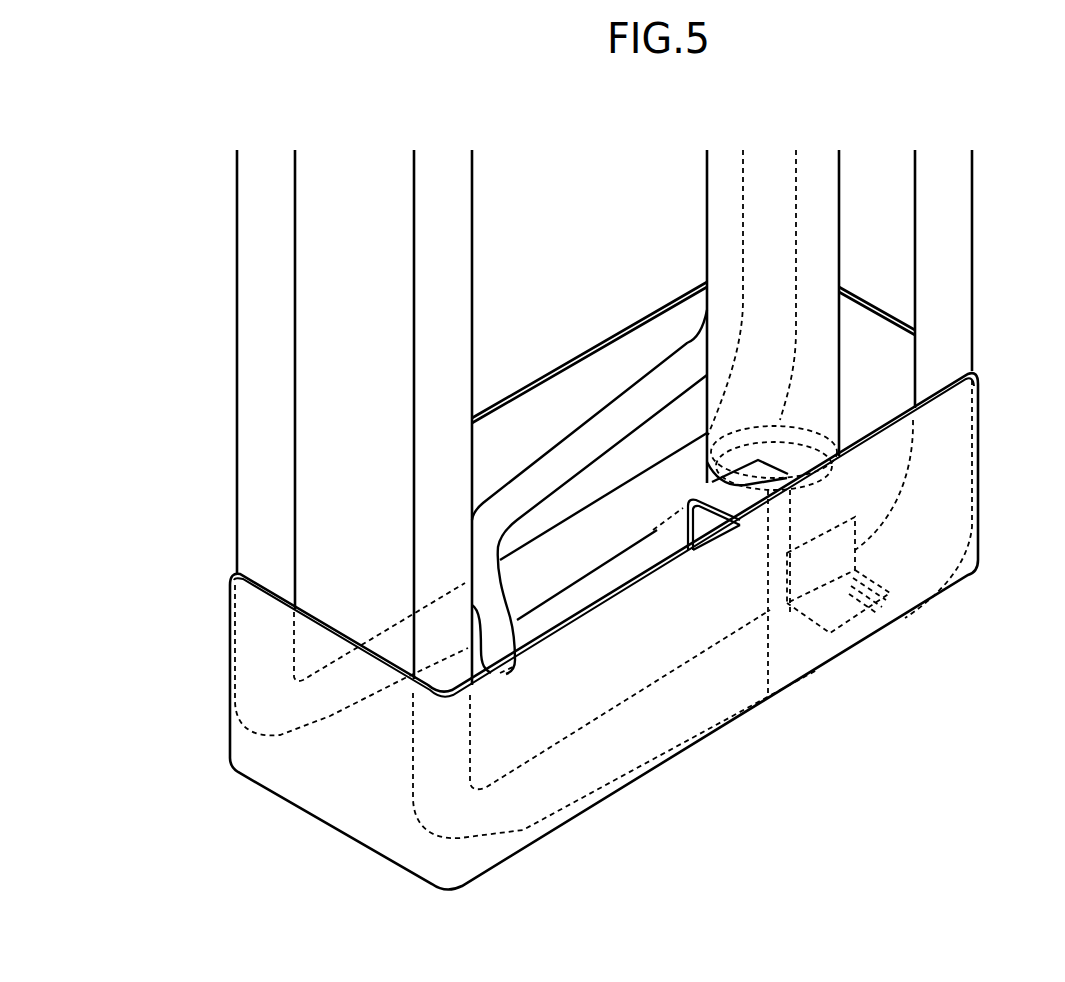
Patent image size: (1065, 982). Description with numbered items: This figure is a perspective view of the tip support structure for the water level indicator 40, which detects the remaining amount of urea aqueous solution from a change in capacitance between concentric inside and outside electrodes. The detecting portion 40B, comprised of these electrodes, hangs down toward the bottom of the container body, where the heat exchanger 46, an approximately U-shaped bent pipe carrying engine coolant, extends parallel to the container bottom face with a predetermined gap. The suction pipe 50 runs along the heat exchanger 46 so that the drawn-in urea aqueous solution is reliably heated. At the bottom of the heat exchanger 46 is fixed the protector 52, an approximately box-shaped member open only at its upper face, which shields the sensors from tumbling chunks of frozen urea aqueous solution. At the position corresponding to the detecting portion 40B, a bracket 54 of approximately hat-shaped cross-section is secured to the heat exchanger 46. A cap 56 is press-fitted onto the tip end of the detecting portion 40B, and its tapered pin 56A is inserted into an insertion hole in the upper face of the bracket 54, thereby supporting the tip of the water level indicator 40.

The water level indicator 40 is at (846, 161).
The detecting portion 40B is at (817, 222).
The heat exchanger 46 is at (232, 374).
The suction pipe 50 is at (618, 420).
The protector 52 is at (320, 797).
The bracket 54 is at (846, 595).
The cap 56 is at (822, 483).
The pin 56A is at (768, 697).